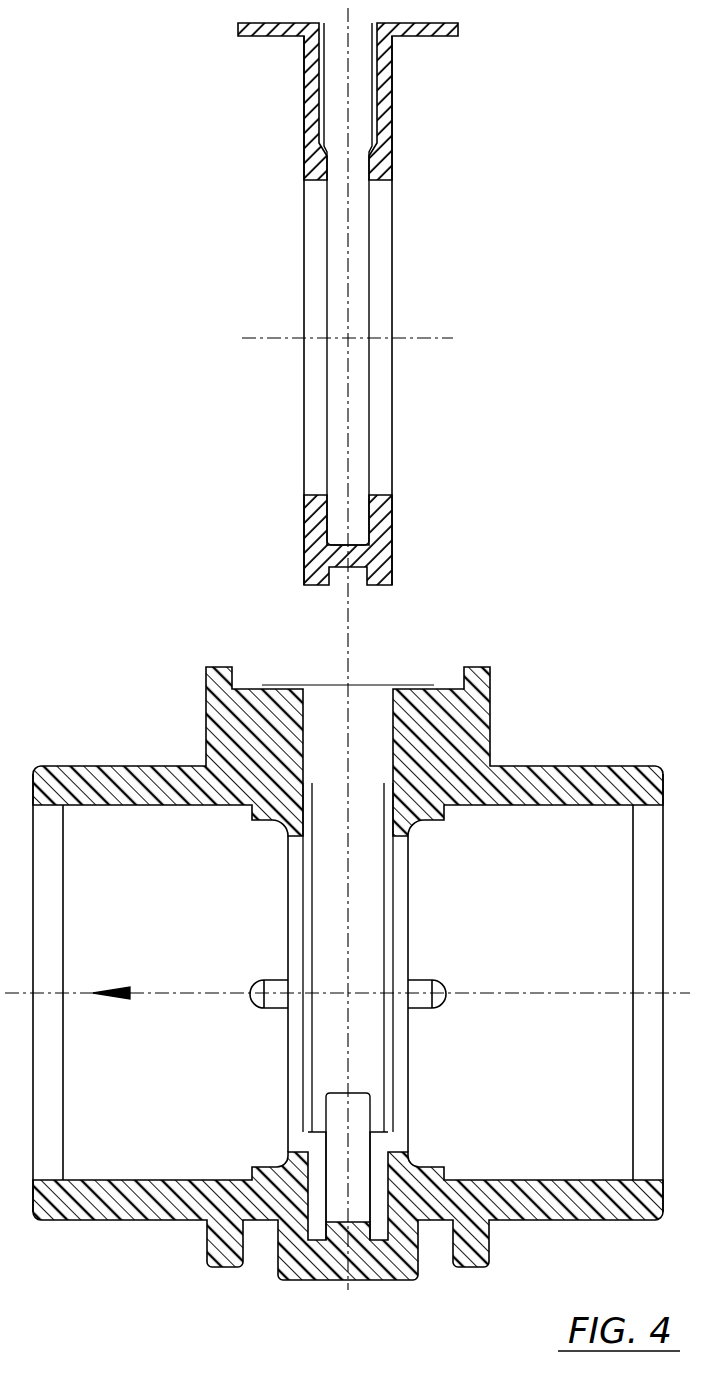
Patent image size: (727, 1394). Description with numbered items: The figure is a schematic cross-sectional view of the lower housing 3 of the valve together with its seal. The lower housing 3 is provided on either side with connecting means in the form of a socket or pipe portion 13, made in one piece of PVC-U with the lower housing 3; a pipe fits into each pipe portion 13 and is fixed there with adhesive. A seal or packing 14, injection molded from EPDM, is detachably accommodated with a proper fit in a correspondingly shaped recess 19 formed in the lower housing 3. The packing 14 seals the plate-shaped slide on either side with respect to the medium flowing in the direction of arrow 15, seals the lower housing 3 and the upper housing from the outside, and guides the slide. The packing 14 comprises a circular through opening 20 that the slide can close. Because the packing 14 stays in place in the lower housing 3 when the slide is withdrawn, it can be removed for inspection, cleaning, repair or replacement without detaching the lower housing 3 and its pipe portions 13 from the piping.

The lower housing 3 is at (473, 702).
The pipe portion 13 is at (107, 778).
The packing 14 is at (387, 115).
The arrow indicating direction of flow 15 is at (128, 975).
The recess 19 is at (362, 703).
The circular through opening 20 is at (358, 270).